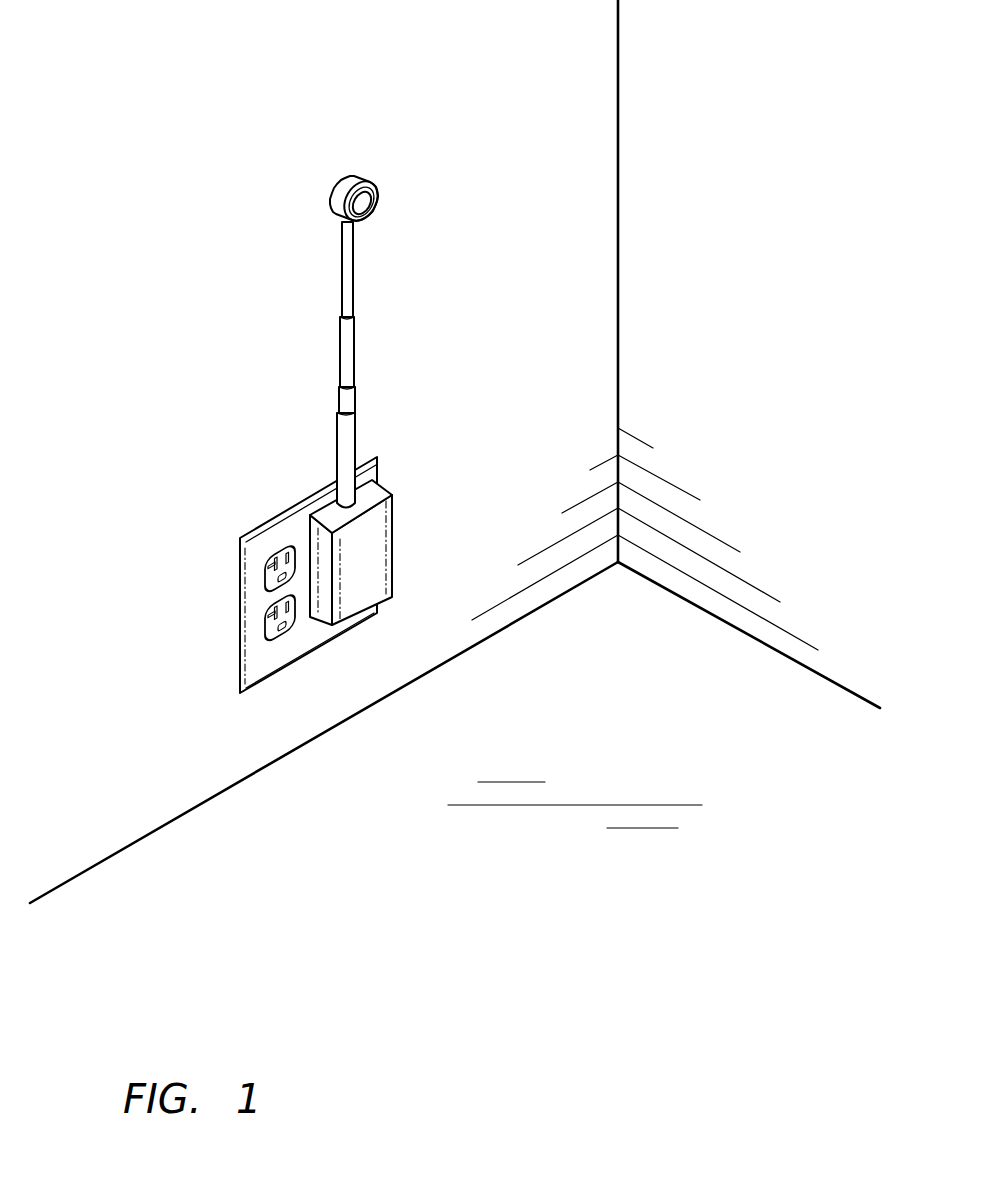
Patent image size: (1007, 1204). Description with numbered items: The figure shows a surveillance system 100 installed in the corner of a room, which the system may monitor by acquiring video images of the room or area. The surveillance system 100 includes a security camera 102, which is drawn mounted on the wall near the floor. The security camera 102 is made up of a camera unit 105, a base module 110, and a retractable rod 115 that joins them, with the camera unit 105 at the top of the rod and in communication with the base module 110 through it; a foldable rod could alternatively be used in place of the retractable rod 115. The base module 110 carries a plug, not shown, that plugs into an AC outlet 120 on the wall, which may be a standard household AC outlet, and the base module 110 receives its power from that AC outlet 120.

The surveillance system 100 is at (704, 739).
The security camera 102 is at (340, 392).
The camera unit 105 is at (378, 196).
The base module 110 is at (390, 545).
The retractable rod 115 is at (356, 350).
The AC outlet 120 is at (268, 521).